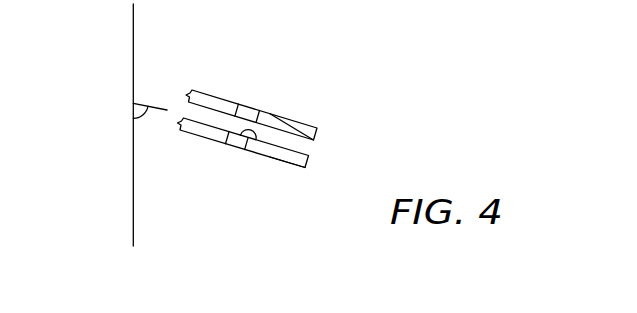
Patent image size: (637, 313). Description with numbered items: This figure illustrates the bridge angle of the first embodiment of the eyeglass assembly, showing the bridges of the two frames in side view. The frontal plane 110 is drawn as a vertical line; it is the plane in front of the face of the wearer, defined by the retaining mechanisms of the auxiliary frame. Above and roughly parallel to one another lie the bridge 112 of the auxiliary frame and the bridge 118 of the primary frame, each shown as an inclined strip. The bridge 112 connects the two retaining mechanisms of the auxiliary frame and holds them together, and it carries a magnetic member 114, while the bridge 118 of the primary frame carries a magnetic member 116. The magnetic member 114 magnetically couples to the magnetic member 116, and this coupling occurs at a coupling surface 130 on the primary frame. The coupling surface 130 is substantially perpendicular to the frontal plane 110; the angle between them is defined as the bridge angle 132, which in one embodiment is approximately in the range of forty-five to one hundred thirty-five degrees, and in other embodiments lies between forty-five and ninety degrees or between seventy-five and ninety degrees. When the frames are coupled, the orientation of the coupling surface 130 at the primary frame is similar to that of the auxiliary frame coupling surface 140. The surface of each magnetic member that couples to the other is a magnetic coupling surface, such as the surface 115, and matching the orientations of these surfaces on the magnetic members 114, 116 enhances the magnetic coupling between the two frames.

The frontal plane 110 is at (133, 45).
The bridge 112 is at (251, 90).
The magnetic member 114 is at (271, 93).
The magnetic coupling surface 115 is at (283, 169).
The magnetic member 116 is at (253, 179).
The bridge 118 is at (240, 164).
The coupling surface 130 is at (293, 151).
The bridge angle 132 is at (162, 141).
The auxiliary frame coupling surface 140 is at (312, 112).